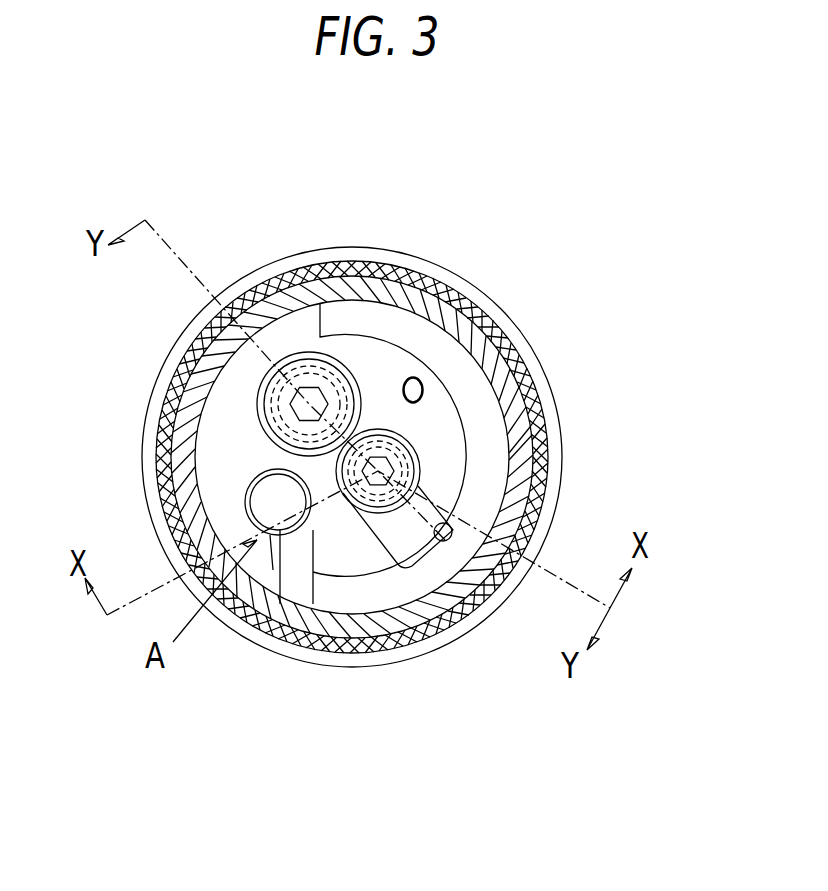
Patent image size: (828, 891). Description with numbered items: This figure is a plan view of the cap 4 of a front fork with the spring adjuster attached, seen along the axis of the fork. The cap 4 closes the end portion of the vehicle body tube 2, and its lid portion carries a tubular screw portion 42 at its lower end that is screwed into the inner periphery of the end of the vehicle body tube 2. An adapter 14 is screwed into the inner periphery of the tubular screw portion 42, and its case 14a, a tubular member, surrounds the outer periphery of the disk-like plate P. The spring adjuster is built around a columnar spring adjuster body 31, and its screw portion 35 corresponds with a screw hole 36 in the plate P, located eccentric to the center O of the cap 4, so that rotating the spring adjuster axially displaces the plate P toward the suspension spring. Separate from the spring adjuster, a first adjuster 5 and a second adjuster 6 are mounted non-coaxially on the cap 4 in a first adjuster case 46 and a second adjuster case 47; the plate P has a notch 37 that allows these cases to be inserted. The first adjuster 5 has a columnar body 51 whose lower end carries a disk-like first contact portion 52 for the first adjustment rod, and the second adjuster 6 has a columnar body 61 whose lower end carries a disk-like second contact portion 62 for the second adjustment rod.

The vehicle body tube 2 is at (358, 248).
The cap 4 is at (505, 315).
The first adjuster 5 is at (420, 460).
The second adjuster 6 is at (257, 392).
The adapter 14 is at (530, 432).
The case 14a is at (548, 378).
The spring adjuster body 31 is at (235, 627).
The screw portion 35 is at (300, 633).
The screw hole 36 is at (318, 560).
The notch 37 is at (452, 545).
The tubular screw portion 42 is at (447, 323).
The first adjuster case 46 is at (418, 600).
The second adjuster case 47 is at (367, 363).
The body 51 is at (540, 548).
The first contact portion 52 is at (412, 430).
The body 61 is at (288, 360).
The second contact portion 62 is at (310, 352).
The plate P is at (370, 614).
The center O is at (413, 390).